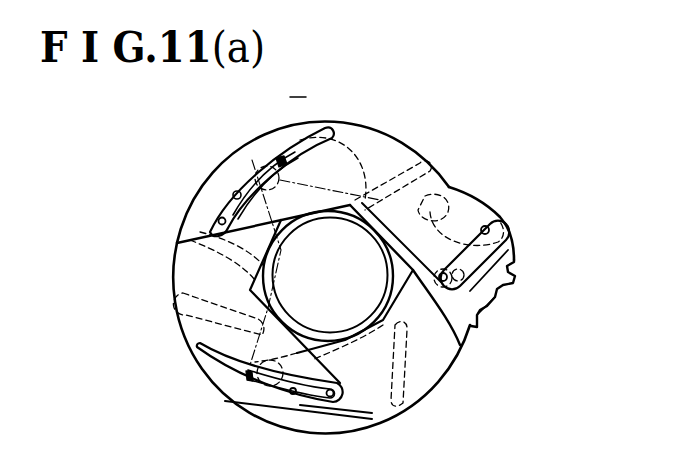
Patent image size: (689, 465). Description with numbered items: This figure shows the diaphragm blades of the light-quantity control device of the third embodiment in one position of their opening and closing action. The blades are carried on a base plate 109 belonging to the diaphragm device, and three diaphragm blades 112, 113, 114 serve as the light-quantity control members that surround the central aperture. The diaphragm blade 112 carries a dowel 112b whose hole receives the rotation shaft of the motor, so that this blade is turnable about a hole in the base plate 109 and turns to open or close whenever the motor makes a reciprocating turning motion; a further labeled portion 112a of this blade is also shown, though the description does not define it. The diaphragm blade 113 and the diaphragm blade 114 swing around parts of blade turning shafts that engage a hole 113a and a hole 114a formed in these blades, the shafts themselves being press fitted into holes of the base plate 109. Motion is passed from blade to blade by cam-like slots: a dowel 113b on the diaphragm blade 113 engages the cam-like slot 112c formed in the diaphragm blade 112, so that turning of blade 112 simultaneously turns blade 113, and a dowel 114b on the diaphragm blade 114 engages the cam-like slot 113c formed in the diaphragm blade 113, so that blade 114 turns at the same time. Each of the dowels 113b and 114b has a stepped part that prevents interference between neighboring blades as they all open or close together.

The base plate 109 is at (510, 269).
The diaphragm blade 112 is at (436, 182).
The pin hole of first lever 112a is at (492, 220).
The dowel 112b is at (466, 296).
The cam-like slot 112c is at (243, 200).
The diaphragm blade 113 is at (190, 322).
The hole 113a is at (277, 161).
The dowel 113b is at (217, 219).
The cam-like slot 113c is at (293, 394).
The diaphragm blade 114 is at (428, 361).
The hole 114a is at (257, 396).
The dowel 114b is at (329, 397).